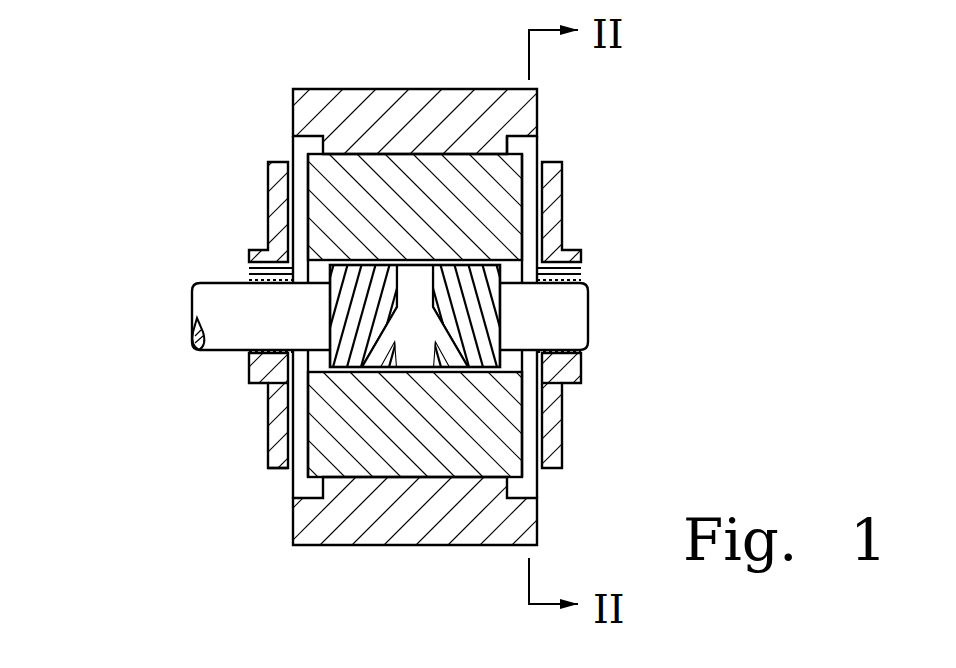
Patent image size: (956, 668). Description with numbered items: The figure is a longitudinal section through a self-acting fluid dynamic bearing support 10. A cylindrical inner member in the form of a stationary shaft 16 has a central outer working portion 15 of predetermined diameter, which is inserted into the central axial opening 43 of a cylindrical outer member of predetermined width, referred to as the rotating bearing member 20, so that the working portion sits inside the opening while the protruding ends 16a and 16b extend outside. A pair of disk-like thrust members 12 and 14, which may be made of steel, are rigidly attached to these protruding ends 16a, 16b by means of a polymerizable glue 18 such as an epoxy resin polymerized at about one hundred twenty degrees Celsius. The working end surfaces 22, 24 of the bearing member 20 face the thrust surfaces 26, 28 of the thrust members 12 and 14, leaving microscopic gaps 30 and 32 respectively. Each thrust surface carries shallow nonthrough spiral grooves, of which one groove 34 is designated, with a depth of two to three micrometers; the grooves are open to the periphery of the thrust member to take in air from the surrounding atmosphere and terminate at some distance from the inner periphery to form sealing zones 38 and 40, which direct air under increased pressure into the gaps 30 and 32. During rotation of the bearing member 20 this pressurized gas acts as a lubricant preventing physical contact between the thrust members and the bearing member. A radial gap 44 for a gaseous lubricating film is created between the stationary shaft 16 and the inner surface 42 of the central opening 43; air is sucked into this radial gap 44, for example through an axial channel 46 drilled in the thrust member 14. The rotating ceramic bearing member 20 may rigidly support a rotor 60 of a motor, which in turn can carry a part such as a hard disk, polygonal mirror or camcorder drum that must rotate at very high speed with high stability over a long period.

The bearing support 10 is at (222, 120).
The thrust member 12 is at (272, 472).
The thrust member 14 is at (552, 403).
The central outer working portion 15 is at (412, 325).
The stationary shaft 16 is at (172, 340).
The protruding end 16a is at (232, 318).
The protruding end 16b is at (557, 317).
The polymerizable glue 18 is at (198, 237).
The rotating bearing member 20 is at (348, 182).
The working end surface 22 is at (290, 150).
The working end surface 24 is at (523, 468).
The thrust surface 26 is at (345, 367).
The thrust surface 28 is at (531, 190).
The microscopic gap 30 is at (278, 387).
The microscopic gap 32 is at (527, 439).
The spiral groove 34 is at (288, 502).
The sealing zone 38 is at (242, 420).
The sealing zone 40 is at (542, 238).
The inner surface 42 is at (644, 307).
The central axial opening 43 is at (222, 349).
The radial gap 44 is at (411, 332).
The axial channel 46 is at (586, 268).
The rotor 60 is at (405, 97).